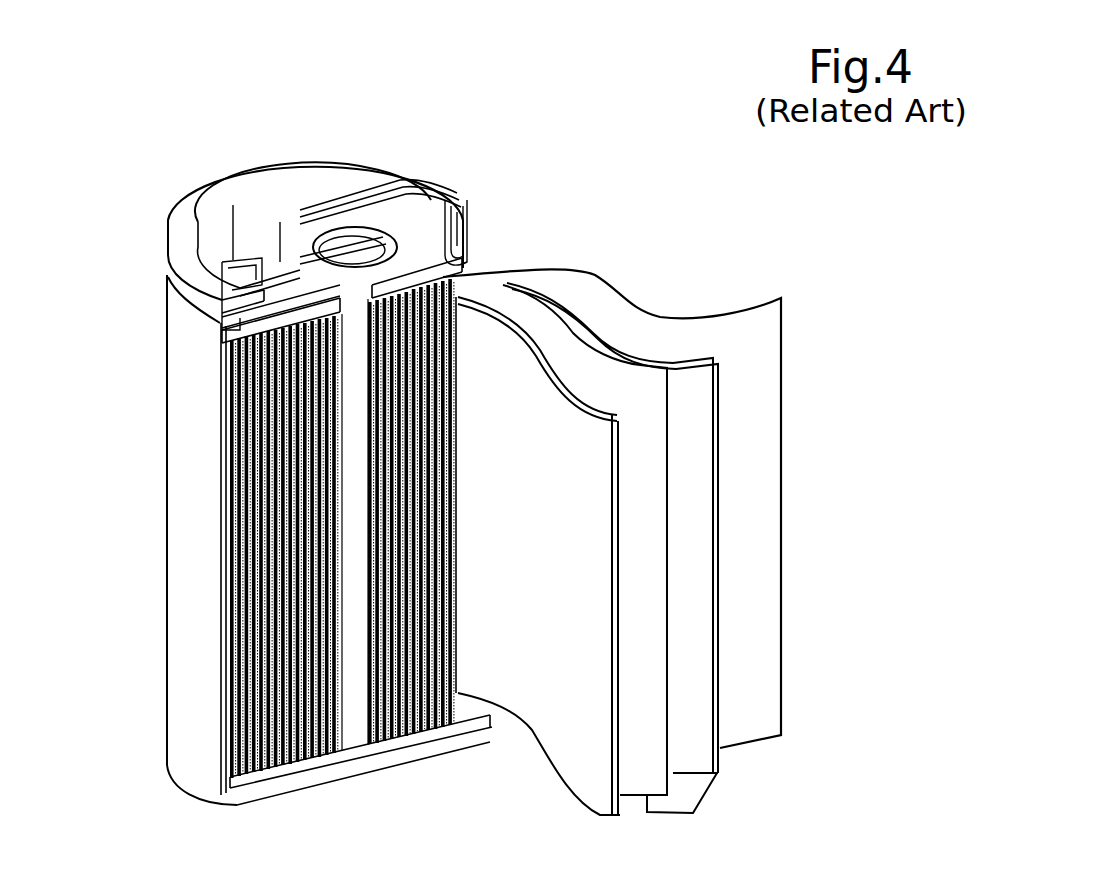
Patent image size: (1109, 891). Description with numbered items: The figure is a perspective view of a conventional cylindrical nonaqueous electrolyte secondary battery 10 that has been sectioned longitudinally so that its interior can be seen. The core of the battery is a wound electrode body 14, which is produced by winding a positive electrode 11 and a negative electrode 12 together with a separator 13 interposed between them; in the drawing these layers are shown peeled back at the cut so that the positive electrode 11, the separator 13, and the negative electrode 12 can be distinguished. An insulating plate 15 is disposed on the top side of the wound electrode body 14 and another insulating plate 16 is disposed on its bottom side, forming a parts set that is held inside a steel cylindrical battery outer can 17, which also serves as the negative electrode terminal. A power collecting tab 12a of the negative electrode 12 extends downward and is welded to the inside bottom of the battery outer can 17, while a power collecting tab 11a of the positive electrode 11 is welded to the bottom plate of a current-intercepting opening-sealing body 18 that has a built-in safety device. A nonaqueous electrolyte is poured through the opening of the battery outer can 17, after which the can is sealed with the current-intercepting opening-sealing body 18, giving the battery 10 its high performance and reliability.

The nonaqueous electrolyte secondary battery 10 is at (560, 178).
The positive electrode 11 is at (605, 455).
The power collecting tab of the positive electrode 11a is at (215, 316).
The negative electrode 12 is at (697, 635).
The power collecting tab of the negative electrode 12a is at (687, 797).
The separator 13 is at (758, 322).
The wound electrode body 14 is at (240, 540).
The insulating plate 15 is at (227, 333).
The insulating plate 16 is at (247, 755).
The battery outer can 17 is at (183, 620).
The current-intercepting opening-sealing body 18 is at (311, 157).